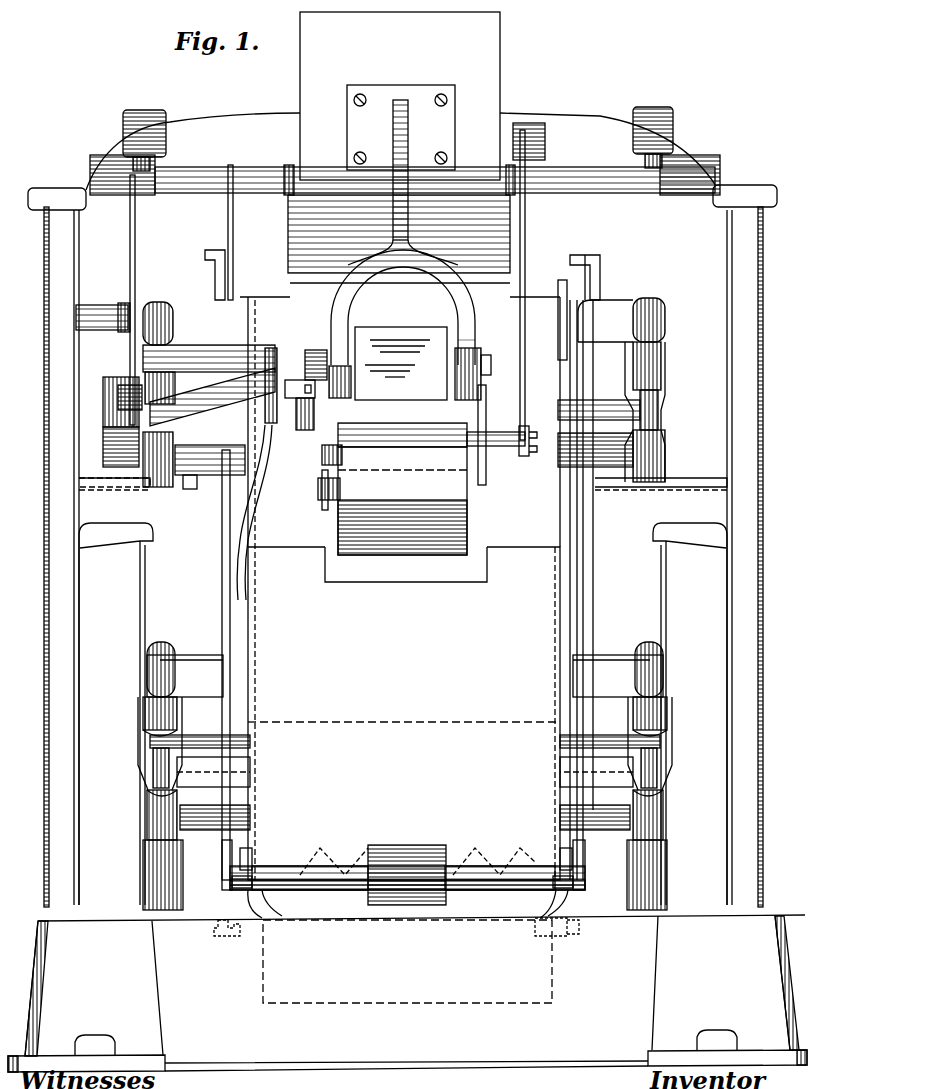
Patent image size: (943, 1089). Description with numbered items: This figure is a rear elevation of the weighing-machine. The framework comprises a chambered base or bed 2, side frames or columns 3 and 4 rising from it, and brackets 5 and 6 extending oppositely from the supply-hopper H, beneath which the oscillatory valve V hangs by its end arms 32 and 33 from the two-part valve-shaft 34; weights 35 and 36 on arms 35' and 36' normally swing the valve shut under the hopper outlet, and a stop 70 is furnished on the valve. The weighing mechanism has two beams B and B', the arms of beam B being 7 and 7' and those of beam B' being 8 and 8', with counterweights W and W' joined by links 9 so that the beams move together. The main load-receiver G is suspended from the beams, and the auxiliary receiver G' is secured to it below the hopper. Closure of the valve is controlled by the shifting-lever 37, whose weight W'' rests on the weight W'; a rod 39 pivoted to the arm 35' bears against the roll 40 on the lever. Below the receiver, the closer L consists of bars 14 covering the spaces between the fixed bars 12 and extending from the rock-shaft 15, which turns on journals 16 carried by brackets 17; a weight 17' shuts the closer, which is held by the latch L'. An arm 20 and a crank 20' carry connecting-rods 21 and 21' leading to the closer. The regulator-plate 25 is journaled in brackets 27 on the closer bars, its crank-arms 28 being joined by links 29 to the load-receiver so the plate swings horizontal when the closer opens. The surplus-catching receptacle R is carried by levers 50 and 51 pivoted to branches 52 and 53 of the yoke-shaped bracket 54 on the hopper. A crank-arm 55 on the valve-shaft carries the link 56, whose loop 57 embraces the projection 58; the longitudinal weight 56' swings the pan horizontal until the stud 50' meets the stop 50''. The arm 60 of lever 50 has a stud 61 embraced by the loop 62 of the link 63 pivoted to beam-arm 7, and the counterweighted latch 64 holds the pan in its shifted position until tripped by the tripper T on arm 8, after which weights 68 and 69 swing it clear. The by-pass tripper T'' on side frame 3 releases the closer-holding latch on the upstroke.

The chambered base 2 is at (248, 1058).
The side frame 3 is at (74, 622).
The side frame 4 is at (727, 618).
The bracket 5 is at (236, 122).
The bracket 6 is at (596, 118).
The beam arm 7 is at (177, 776).
The beam arm 7' is at (627, 776).
The beam arm 8 is at (212, 391).
The beam arm 8' is at (666, 405).
The link 9 is at (140, 576).
The stationary bar 12 is at (335, 858).
The closer bar 14 is at (500, 890).
The rock-shaft 15 is at (310, 891).
The journal 16 is at (232, 880).
The bracket 17 is at (388, 863).
The weight 17' is at (407, 863).
The arm 20 is at (198, 275).
The crank 20' is at (595, 307).
The connecting-rod 21 is at (211, 665).
The connecting-rod 21' is at (594, 590).
The regulator-plate 25 is at (380, 1003).
The depending bracket 27 is at (264, 912).
The crank-arm 28 is at (226, 926).
The link 29 is at (222, 846).
The valve end arm 32 is at (286, 178).
The valve end arm 33 is at (506, 175).
The valve-shaft 34 is at (195, 193).
The weight 35 is at (146, 124).
The arm 35' is at (162, 158).
The weight 36 is at (663, 120).
The arm 36' is at (628, 156).
The shifting-lever 37 is at (110, 390).
The rod 39 is at (130, 247).
The roll 40 is at (145, 382).
The lever 50 is at (317, 455).
The stud 50' is at (311, 483).
The stop 50'' is at (304, 494).
The lever 51 is at (488, 438).
The bracket branch 52 is at (331, 306).
The bracket branch 53 is at (475, 306).
The yoke-shaped bracket 54 is at (402, 175).
The crank-arm 55 is at (532, 128).
The link 56 is at (535, 285).
The longitudinal weight 56' is at (402, 423).
The loop 57 is at (528, 430).
The lateral projection 58 is at (532, 455).
The rearwardly-extending arm 60 is at (343, 370).
The stud 61 is at (248, 350).
The loop 62 is at (270, 348).
The link 63 is at (250, 545).
The counterweighted latch 64 is at (304, 430).
The weight 68 is at (312, 350).
The weight 69 is at (480, 352).
The stop 70 is at (233, 226).
The supply-hopper H is at (400, 96).
The valve V is at (399, 239).
The main load-receiver G is at (404, 713).
The auxiliary receiver G' is at (401, 346).
The receptacle R is at (417, 501).
The closer L is at (407, 892).
The latch L' is at (194, 450).
The tripper T is at (295, 399).
The by-pass tripper T'' is at (191, 494).
The counterweight W is at (616, 844).
The counterweight W' is at (595, 468).
The weight W'' is at (93, 439).
The beam B is at (605, 731).
The beam B' is at (611, 390).